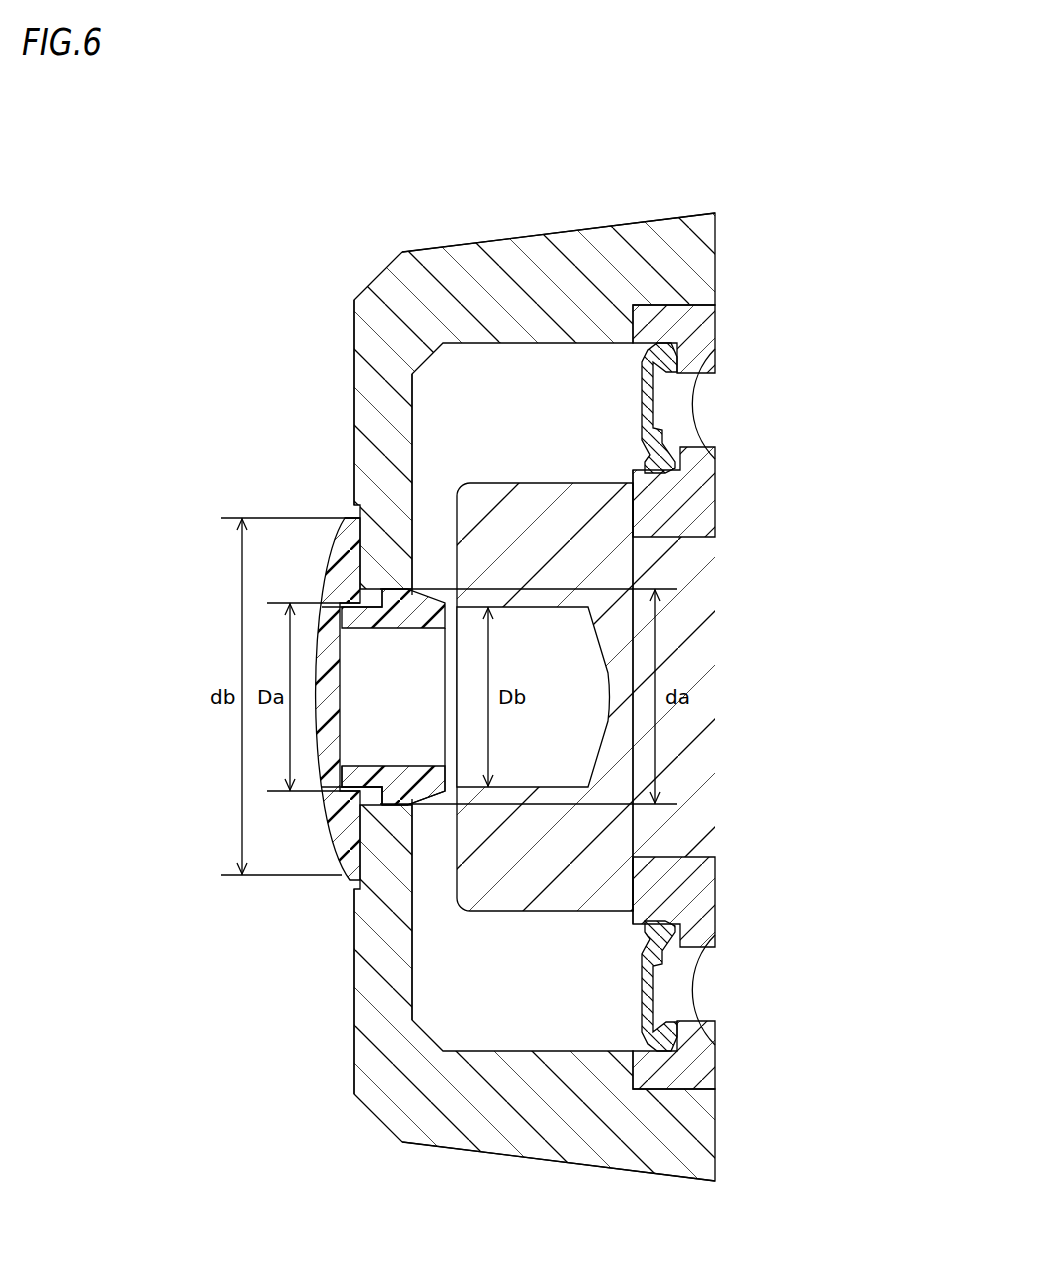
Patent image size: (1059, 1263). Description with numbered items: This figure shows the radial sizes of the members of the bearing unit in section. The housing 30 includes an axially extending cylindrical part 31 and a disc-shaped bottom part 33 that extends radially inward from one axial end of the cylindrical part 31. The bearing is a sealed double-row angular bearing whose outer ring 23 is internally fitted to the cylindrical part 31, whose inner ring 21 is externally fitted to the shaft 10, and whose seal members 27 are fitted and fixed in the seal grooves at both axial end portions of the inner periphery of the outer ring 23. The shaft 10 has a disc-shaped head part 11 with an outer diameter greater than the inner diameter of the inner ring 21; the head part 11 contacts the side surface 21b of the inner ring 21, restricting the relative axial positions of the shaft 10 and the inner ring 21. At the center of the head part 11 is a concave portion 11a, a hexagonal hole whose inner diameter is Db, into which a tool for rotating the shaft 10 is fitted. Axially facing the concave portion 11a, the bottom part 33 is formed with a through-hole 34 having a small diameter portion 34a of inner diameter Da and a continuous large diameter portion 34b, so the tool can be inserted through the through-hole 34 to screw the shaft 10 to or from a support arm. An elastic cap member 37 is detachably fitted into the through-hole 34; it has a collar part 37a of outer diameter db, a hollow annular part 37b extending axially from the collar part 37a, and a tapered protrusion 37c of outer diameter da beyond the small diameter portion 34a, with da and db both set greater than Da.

The shaft 10 is at (497, 478).
The head part 11 is at (575, 512).
The concave portion 11a is at (572, 790).
The inner ring 21 is at (705, 512).
The side surface 21b is at (633, 492).
The outer ring 23 is at (718, 328).
The seal member 27 is at (668, 340).
The housing 30 is at (378, 282).
The cylindrical part 31 is at (565, 272).
The bottom part 33 is at (368, 418).
The through-hole 34 is at (152, 722).
The small diameter portion 34a is at (394, 776).
The large diameter portion 34b is at (378, 757).
The cap member 37 is at (327, 574).
The collar part 37a is at (345, 527).
The annular part 37b is at (366, 583).
The protrusion 37c is at (428, 588).